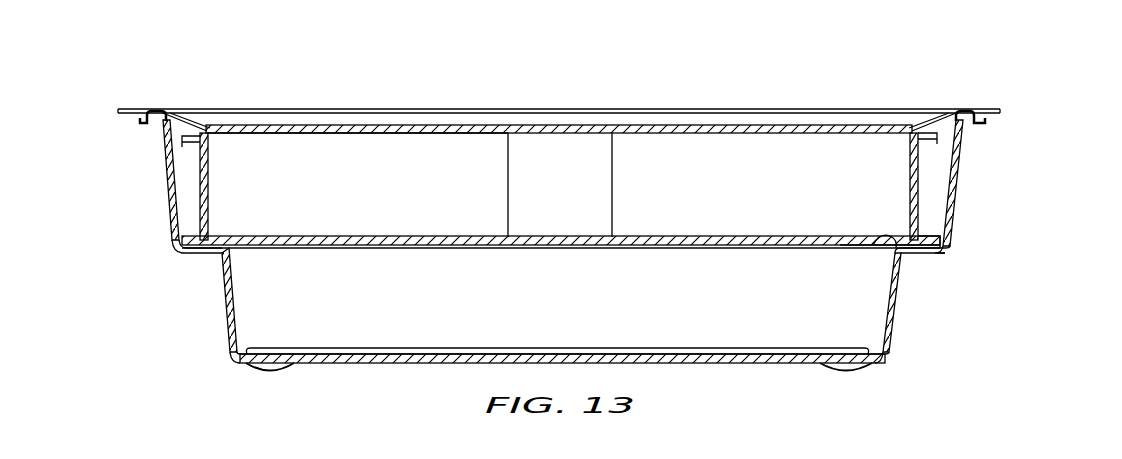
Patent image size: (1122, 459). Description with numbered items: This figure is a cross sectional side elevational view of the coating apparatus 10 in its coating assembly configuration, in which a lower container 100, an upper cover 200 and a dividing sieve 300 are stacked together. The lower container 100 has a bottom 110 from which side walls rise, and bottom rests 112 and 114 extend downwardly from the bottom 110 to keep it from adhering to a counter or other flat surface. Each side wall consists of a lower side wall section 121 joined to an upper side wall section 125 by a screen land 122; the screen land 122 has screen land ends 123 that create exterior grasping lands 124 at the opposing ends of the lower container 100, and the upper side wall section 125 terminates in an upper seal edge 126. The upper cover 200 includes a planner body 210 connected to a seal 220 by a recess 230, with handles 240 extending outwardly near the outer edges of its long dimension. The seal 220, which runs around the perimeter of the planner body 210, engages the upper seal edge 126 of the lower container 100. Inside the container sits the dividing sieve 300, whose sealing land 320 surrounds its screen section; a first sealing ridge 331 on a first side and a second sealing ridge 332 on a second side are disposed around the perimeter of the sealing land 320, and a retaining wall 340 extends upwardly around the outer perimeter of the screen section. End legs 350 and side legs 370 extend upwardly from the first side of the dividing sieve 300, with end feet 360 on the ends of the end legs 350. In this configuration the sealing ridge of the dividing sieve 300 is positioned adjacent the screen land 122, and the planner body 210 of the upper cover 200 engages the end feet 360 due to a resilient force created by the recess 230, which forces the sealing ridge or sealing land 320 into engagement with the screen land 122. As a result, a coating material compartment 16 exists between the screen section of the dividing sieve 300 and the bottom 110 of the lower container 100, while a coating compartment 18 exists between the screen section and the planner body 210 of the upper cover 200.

The coating apparatus 10 is at (797, 94).
The coating material compartment 16 is at (573, 307).
The coating compartment 18 is at (373, 194).
The lower container 100 is at (158, 168).
The bottom 110 is at (393, 368).
The bottom rest 112 is at (270, 374).
The bottom rest 114 is at (848, 374).
The lower side wall section 121 is at (224, 290).
The screen land 122 is at (856, 236).
The screen land end 123 is at (884, 250).
The exterior grasping land 124 is at (907, 257).
The upper side wall section 125 is at (166, 198).
The upper seal edge 126 is at (156, 113).
The upper cover 200 is at (407, 104).
The planner body 210 is at (287, 125).
The seal 220 is at (962, 108).
The recess 230 is at (184, 117).
The handle 240 is at (118, 110).
The dividing sieve 300 is at (170, 138).
The sealing land 320 is at (758, 236).
The first sealing ridge 331 is at (943, 233).
The second sealing ridge 332 is at (940, 255).
The retaining wall 340 is at (280, 234).
The end leg 350 is at (928, 178).
The end foot 360 is at (932, 145).
The side leg 370 is at (610, 178).